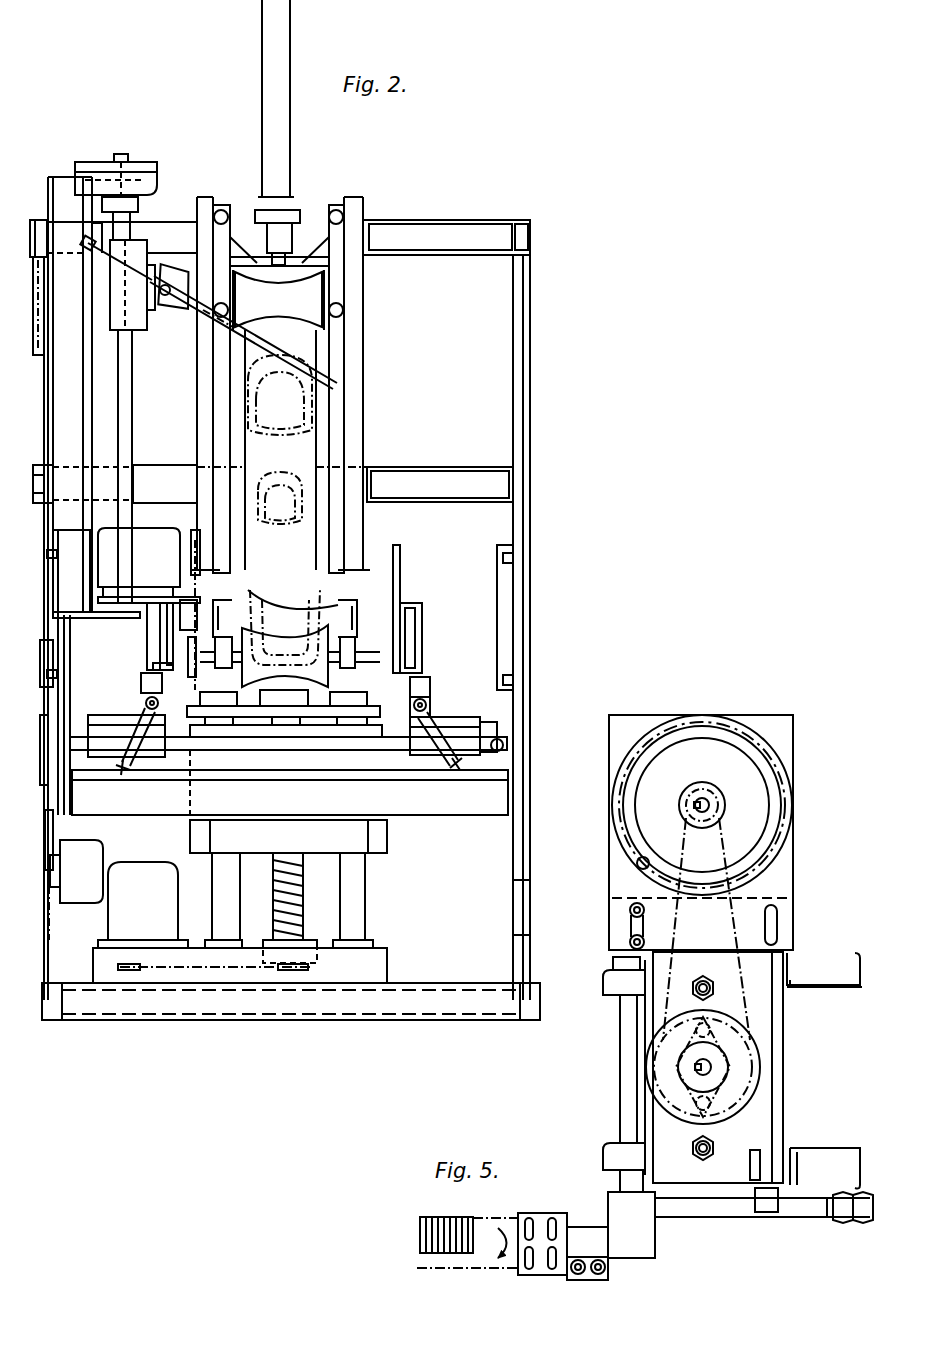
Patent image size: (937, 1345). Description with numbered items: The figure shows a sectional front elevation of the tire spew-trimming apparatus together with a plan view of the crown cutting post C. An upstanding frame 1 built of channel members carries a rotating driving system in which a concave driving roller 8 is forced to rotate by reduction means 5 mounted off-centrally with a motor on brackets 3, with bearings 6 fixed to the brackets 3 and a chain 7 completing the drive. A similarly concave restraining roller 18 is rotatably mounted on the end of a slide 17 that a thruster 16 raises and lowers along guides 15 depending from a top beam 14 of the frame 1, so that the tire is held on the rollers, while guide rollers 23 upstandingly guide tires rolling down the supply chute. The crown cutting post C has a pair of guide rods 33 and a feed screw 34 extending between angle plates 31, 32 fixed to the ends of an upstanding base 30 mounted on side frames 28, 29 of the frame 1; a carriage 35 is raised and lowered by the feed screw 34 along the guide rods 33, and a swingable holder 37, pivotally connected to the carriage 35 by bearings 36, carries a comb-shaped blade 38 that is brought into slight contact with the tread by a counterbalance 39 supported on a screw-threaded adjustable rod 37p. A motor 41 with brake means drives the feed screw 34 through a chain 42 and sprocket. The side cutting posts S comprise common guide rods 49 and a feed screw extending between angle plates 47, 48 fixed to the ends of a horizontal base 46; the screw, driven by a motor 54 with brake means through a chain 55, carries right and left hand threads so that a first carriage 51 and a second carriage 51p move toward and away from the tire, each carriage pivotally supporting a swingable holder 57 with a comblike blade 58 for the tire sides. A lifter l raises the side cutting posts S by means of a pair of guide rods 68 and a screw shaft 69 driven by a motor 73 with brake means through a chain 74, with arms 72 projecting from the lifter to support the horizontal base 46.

In FIG. 2, the frame 1 is at (470, 225).
In FIG. 2, the brackets 3 is at (280, 612).
In FIG. 2, the reduction means 5 is at (149, 565).
In FIG. 2, the bearings 6 is at (355, 655).
In FIG. 2, the chain 7 is at (186, 678).
In FIG. 2, the concave driving roller 8 is at (330, 665).
In FIG. 2, the top beam 14 is at (205, 212).
In FIG. 2, the guides 15 is at (205, 418).
In FIG. 2, the thruster 16 is at (292, 122).
In FIG. 2, the slide 17 is at (350, 280).
In FIG. 2, the restraining roller 18 is at (278, 300).
In FIG. 2, the guide rollers 23 is at (300, 440).
In FIG. 2, the side frame 28 is at (30, 258).
In FIG. 2, the side frame 29 is at (40, 503).
In FIG. 2, the upstanding base 30 is at (53, 450).
In FIG. 5, the upstanding base 30 is at (830, 988).
In FIG. 2, the angle plate 31 is at (88, 195).
In FIG. 5, the angle plate 31 is at (765, 1025).
In FIG. 2, the angle plate 32 is at (125, 612).
In FIG. 2, the guide rods 33 is at (130, 412).
In FIG. 5, the guide rods 33 is at (715, 988).
In FIG. 5, the feed screw 34 is at (706, 1068).
In FIG. 2, the carriage 35 is at (110, 247).
In FIG. 5, the bearings 36 is at (615, 985).
In FIG. 2, the swingable holder 37 is at (178, 310).
In FIG. 5, the swingable holder 37 is at (650, 1235).
In FIG. 2, the rod 37p is at (117, 307).
In FIG. 5, the rod 37p is at (735, 1217).
In FIG. 2, the blade 38 is at (280, 352).
In FIG. 5, the blade 38 is at (450, 1268).
In FIG. 5, the counterbalance 39 is at (840, 1222).
In FIG. 2, the motor 41 is at (155, 185).
In FIG. 5, the motor 41 is at (790, 768).
In FIG. 2, the chain 42 is at (120, 154).
In FIG. 5, the chain 42 is at (740, 913).
In FIG. 2, the horizontal base 46 is at (440, 818).
In FIG. 2, the angle plate 47 is at (62, 795).
In FIG. 2, the angle plate 48 is at (418, 782).
In FIG. 2, the common guide rods 49 is at (248, 740).
In FIG. 2, the carriage 51 is at (110, 720).
In FIG. 2, the carriage 51p is at (455, 718).
In FIG. 2, the motor 54 is at (90, 852).
In FIG. 2, the chain 55 is at (55, 850).
In FIG. 2, the swingable holder 57 is at (435, 680).
In FIG. 2, the comblike blade 58 is at (400, 565).
In FIG. 2, the guide rods 68 is at (232, 915).
In FIG. 2, the screw shaft 69 is at (305, 885).
In FIG. 2, the arms 72 is at (330, 835).
In FIG. 2, the motor 73 is at (135, 880).
In FIG. 2, the chain 74 is at (178, 968).
In FIG. 2, the side cutting posts S is at (372, 548).
In FIG. 2, the crown cutting post C is at (150, 397).
In FIG. 5, the crown cutting post C is at (590, 1093).
In FIG. 2, the lifter l is at (375, 935).